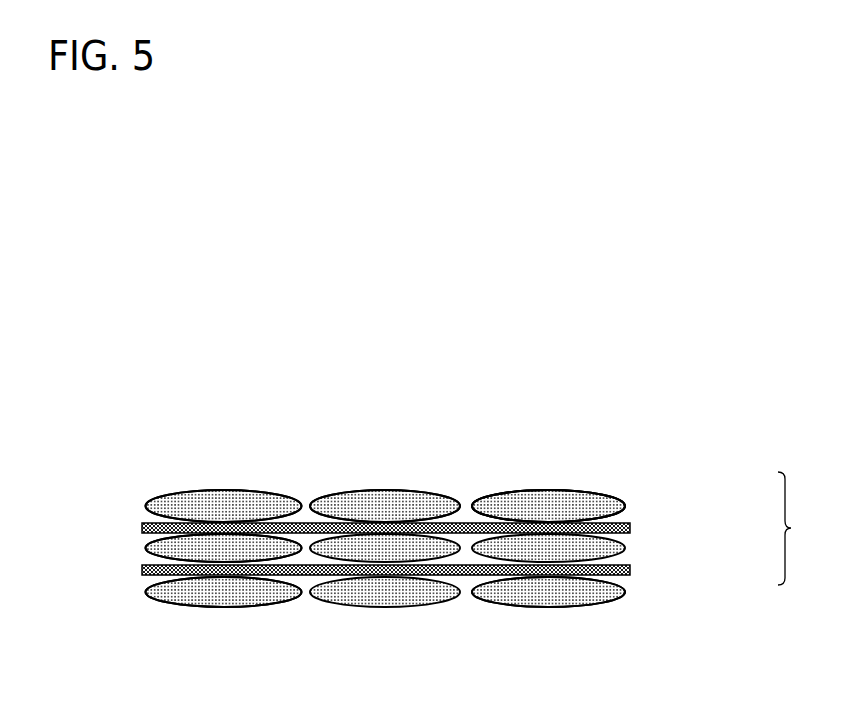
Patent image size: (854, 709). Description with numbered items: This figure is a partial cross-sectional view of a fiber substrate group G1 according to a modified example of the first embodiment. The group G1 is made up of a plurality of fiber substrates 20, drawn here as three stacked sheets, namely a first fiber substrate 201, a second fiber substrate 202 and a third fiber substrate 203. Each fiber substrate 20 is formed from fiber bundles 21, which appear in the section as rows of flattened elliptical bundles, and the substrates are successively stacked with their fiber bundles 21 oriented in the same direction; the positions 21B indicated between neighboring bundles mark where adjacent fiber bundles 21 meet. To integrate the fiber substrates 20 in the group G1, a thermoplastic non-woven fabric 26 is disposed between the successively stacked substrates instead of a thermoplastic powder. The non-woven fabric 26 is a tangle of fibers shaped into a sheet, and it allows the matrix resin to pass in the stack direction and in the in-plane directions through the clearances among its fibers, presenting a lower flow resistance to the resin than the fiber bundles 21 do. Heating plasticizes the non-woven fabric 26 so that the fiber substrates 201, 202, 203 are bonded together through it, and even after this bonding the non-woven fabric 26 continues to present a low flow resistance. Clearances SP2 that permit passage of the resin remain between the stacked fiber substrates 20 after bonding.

The fiber substrate 20 is at (459, 539).
The first fiber substrate 201 is at (641, 507).
The second fiber substrate 202 is at (641, 548).
The third fiber substrate 203 is at (641, 590).
The fiber bundle 21 is at (222, 490).
The boundary between fiber bundles 21B is at (303, 492).
The thermoplastic non-woven fabric 26 is at (603, 512).
The clearance SP2 is at (135, 570).
The fiber substrate group G1 is at (799, 528).